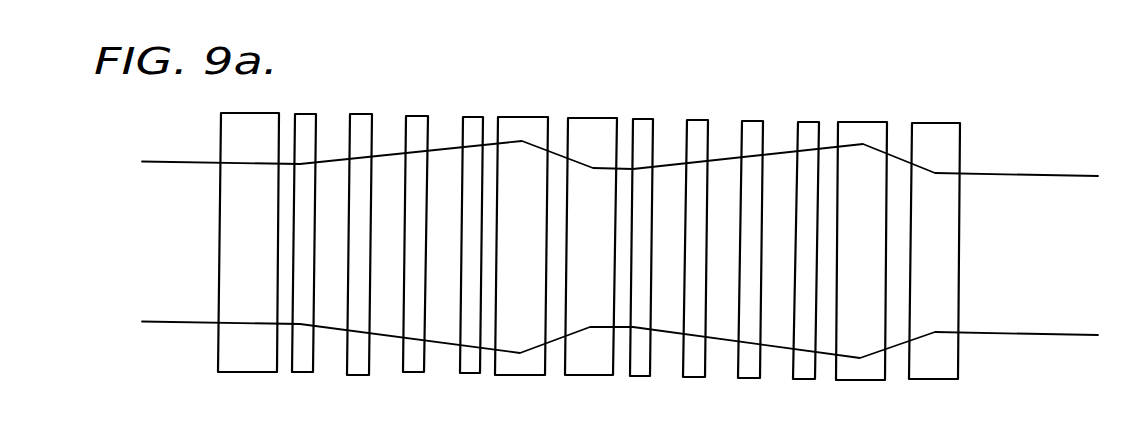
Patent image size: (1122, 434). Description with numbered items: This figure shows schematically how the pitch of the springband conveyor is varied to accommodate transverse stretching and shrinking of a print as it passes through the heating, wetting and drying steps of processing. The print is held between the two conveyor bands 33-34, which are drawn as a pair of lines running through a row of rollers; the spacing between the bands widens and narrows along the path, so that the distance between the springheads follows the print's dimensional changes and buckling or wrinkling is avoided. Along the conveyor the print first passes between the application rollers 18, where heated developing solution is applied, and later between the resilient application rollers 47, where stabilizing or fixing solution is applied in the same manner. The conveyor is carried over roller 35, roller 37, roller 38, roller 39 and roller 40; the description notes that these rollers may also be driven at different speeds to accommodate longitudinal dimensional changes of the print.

The conveyor bands 33-34 is at (178, 323).
The roller 35 is at (226, 128).
The application rollers 18 is at (357, 114).
The roller 37 is at (513, 117).
The roller 38 is at (588, 118).
The resilient application rollers 47 is at (697, 120).
The roller 39 is at (857, 122).
The lens element 40 is at (933, 123).